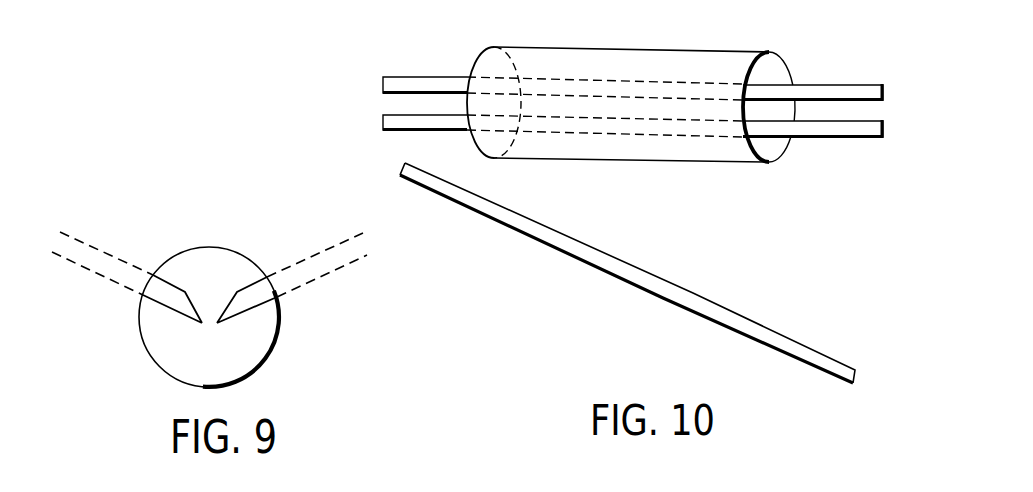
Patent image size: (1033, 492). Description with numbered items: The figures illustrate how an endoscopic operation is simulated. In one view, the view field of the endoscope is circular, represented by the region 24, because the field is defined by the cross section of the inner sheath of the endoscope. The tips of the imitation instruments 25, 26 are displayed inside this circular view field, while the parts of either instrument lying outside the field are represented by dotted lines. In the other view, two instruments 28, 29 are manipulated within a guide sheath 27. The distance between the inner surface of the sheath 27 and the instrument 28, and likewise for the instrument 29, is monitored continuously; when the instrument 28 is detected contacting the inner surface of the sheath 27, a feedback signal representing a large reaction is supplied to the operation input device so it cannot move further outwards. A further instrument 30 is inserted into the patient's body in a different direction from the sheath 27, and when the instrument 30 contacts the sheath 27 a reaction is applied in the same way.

In FIG. 9, the region 24 is at (190, 248).
In FIG. 9, the imitation instrument 25 is at (127, 287).
In FIG. 9, the imitation instrument 26 is at (283, 292).
In FIG. 10, the guide sheath 27 is at (588, 50).
In FIG. 10, the instrument 28 is at (843, 84).
In FIG. 10, the instrument 29 is at (833, 138).
In FIG. 10, the instrument 30 is at (753, 322).